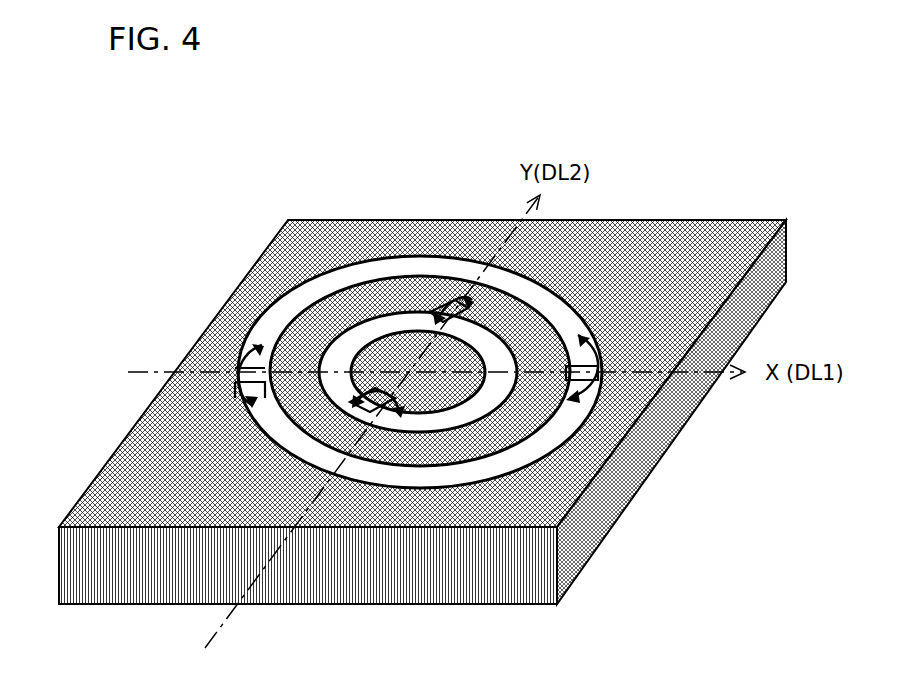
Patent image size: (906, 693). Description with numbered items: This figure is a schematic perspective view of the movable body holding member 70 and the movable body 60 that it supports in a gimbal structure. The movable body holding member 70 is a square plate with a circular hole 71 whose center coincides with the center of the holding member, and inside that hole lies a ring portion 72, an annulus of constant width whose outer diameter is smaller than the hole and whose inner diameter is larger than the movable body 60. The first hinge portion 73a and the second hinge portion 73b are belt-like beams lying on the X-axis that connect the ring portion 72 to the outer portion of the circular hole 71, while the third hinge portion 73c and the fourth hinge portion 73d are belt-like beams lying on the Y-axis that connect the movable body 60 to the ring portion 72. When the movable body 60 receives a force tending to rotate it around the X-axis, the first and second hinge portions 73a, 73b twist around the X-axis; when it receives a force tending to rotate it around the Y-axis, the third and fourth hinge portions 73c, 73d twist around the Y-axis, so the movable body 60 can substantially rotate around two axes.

The movable body 60 is at (408, 350).
The movable body holding member 70 is at (653, 220).
The circular hole 71 is at (558, 300).
The ring portion 72 is at (520, 440).
The first hinge portion 73a is at (593, 357).
The second hinge portion 73b is at (233, 353).
The third hinge portion 73c is at (455, 300).
The fourth hinge portion 73d is at (368, 408).